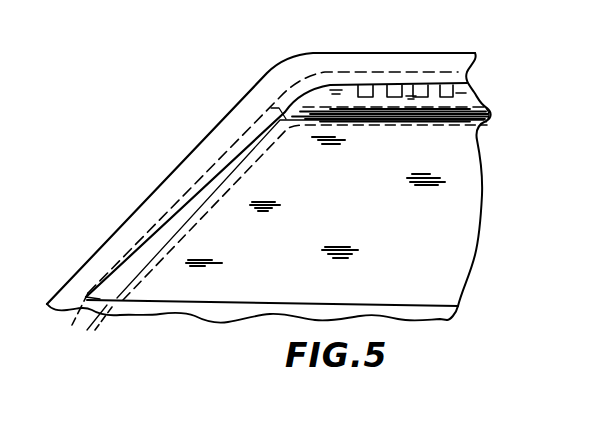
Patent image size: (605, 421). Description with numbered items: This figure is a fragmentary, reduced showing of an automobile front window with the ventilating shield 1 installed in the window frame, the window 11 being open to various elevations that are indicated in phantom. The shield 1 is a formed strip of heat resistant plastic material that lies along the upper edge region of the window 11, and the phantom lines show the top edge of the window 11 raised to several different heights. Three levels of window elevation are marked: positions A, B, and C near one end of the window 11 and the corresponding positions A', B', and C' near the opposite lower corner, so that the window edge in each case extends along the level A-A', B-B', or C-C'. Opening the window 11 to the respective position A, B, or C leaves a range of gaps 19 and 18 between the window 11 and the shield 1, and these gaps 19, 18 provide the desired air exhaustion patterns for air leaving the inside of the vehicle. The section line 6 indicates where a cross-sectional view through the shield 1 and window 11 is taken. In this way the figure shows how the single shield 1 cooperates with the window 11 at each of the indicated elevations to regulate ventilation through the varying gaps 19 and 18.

The ventilating shield 1 is at (417, 127).
The section line 6- 6 is at (393, 60).
The window 11 is at (350, 107).
The gap 18 is at (545, 108).
The gap 19 is at (53, 352).
The window position A is at (309, 185).
The window position B is at (417, 108).
The window position C is at (327, 209).
The window position A' is at (72, 354).
The window position B' is at (93, 352).
The window position C' is at (112, 343).